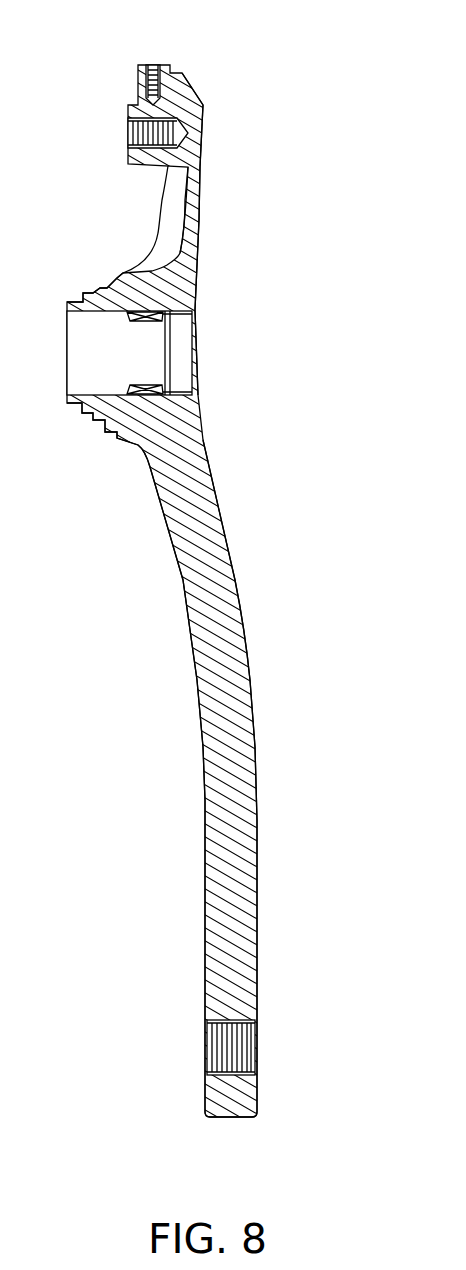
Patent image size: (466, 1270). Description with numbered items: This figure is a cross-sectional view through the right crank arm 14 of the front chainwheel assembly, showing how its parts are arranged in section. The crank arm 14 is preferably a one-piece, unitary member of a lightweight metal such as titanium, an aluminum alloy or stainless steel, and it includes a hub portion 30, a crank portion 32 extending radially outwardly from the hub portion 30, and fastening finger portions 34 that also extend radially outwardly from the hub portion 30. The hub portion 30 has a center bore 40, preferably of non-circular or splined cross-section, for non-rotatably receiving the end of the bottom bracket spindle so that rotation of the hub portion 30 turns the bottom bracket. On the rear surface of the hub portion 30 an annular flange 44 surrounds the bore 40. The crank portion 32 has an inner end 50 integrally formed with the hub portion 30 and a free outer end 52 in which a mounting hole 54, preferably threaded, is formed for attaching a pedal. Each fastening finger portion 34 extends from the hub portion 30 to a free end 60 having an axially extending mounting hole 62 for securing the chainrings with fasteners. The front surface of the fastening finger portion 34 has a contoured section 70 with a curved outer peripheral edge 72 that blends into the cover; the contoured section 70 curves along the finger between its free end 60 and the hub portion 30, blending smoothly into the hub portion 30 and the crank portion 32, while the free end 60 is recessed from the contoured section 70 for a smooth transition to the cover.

The crank arm 14 is at (233, 170).
The hub portion 30 is at (194, 288).
The crank portion 32 is at (203, 687).
The fastening finger portion 34 is at (203, 124).
The center bore 40 is at (110, 312).
The annular flange 44 is at (78, 300).
The inner end 50 is at (150, 467).
The free outer end 52 is at (223, 1120).
The mounting hole 54 is at (223, 1070).
The free end 60 is at (168, 65).
The mounting hole 62 is at (129, 134).
The contoured section 70 is at (203, 174).
The curved outer peripheral edge 72 is at (196, 93).